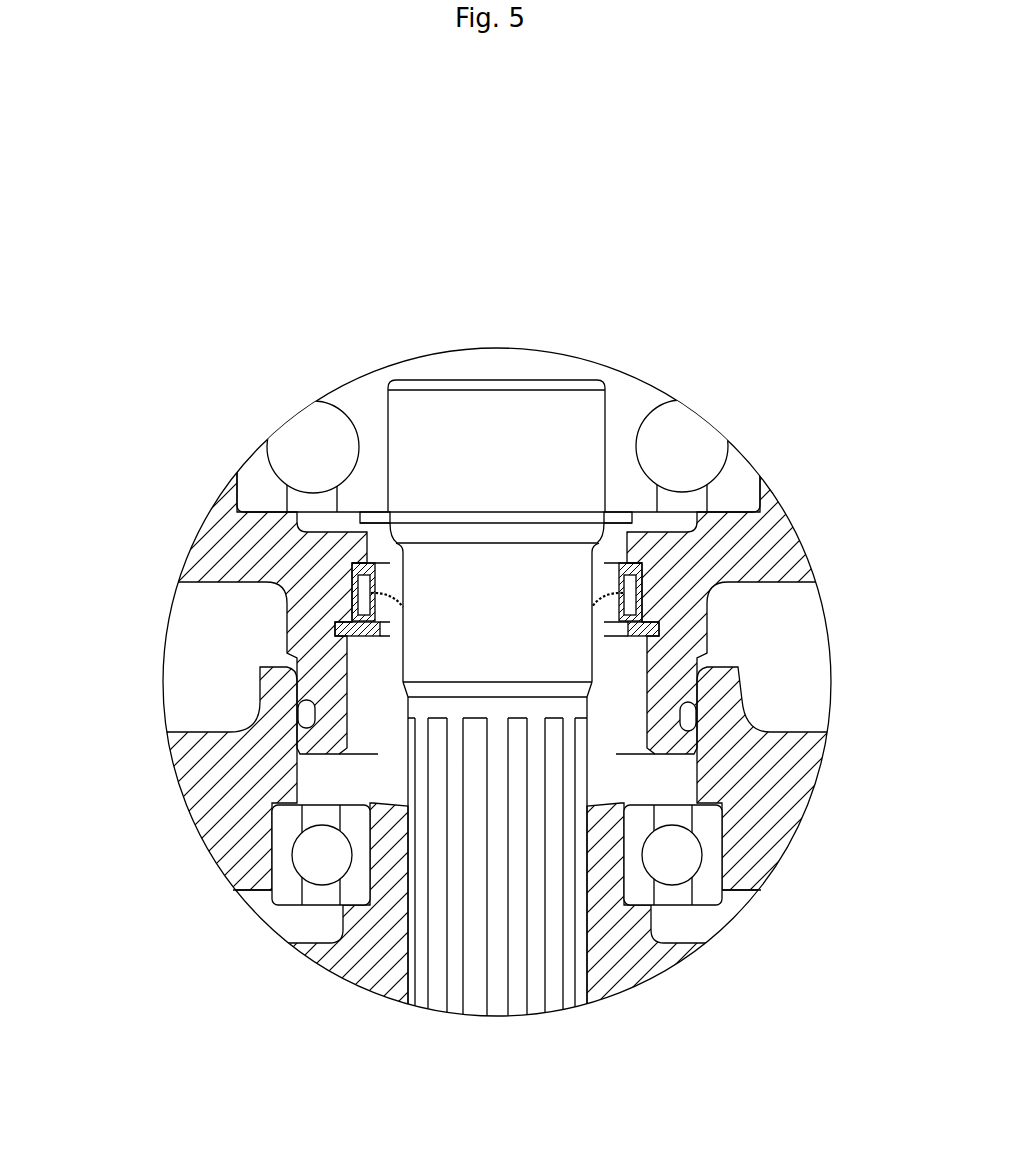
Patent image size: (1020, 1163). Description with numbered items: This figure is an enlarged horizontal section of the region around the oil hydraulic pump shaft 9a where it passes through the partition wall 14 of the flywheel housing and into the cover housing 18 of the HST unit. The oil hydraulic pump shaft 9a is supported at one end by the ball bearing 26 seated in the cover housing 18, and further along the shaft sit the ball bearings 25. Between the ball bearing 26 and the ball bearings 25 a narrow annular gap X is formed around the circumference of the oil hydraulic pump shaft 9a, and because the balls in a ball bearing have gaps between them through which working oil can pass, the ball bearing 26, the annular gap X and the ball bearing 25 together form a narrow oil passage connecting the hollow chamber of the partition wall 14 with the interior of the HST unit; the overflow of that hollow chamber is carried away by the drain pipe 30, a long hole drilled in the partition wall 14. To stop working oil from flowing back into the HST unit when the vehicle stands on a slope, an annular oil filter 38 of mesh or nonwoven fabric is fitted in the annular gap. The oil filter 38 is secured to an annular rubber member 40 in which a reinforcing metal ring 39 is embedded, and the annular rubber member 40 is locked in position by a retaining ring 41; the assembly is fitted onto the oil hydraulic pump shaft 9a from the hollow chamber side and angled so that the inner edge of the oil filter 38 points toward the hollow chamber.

The oil hydraulic pump shaft 9a is at (522, 958).
The partition wall 14 is at (194, 732).
The cover housing 18 is at (777, 585).
The ball bearings 25 is at (709, 833).
The ball bearing 26 is at (369, 417).
The drain pipe 30 is at (340, 650).
The oil filter 38 is at (397, 552).
The reinforcing metal ring 39 is at (352, 577).
The annular rubber member 40 is at (643, 565).
The retaining ring 41 is at (399, 606).
The annular gap X is at (611, 689).